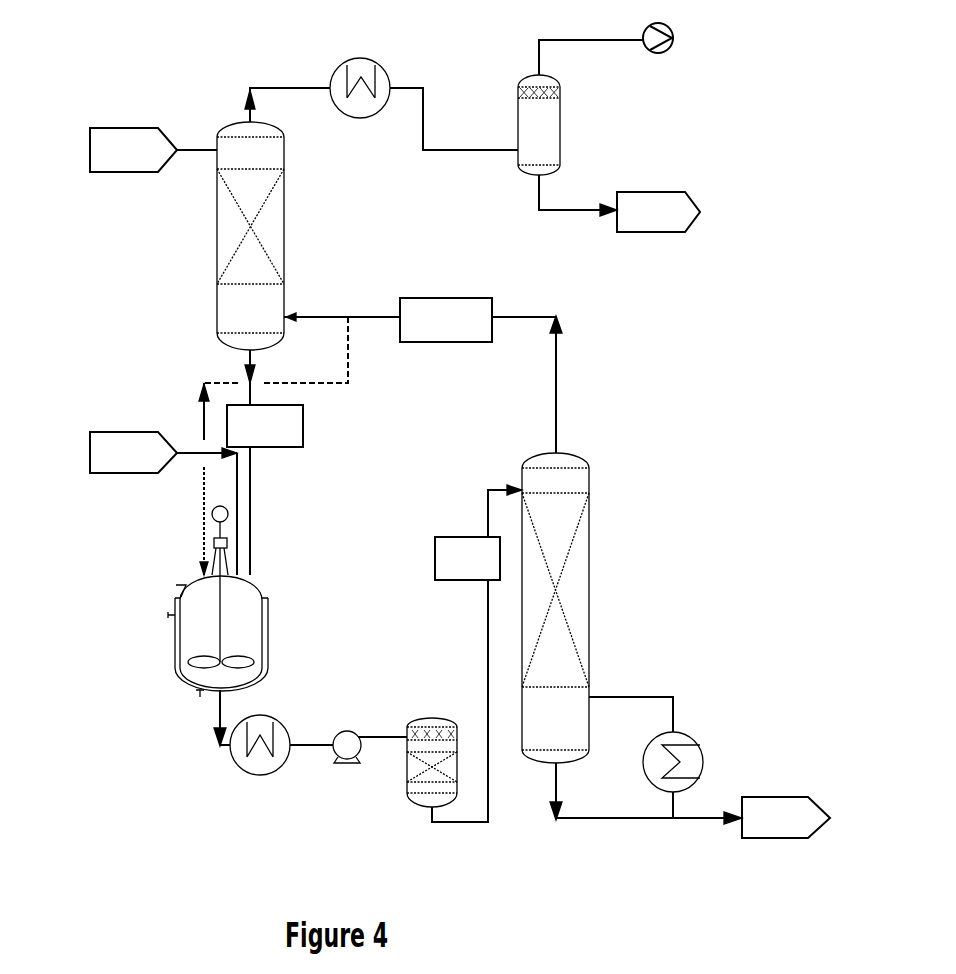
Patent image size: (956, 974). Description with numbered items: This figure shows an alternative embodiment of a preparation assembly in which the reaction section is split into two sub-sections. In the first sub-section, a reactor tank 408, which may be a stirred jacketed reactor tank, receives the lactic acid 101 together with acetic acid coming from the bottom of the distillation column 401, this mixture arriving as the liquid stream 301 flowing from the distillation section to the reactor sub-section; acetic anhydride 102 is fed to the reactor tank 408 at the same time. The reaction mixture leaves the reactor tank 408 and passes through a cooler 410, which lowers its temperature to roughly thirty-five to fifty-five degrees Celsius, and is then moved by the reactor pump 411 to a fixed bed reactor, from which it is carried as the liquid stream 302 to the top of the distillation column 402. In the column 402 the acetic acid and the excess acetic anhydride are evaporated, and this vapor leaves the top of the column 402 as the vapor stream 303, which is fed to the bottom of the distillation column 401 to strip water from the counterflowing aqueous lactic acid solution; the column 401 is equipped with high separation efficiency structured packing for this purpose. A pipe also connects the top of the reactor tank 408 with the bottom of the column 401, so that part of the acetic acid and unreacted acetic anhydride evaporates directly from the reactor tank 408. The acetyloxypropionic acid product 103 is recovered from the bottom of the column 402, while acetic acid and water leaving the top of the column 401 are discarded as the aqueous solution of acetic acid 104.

The lactic acid 101 is at (153, 150).
The acetic anhydride 102 is at (163, 503).
The (S)-2-acetyloxypropionic acid 103 is at (786, 817).
The aqueous solution of acetic acid 104 is at (658, 212).
The liquid stream 301 is at (265, 426).
The liquid stream 302 is at (467, 558).
The vapor stream 303 is at (446, 320).
The distillation column 401 is at (284, 220).
The distillation column 402 is at (548, 637).
The reactor tank 408 is at (262, 600).
The cooler 410 is at (243, 771).
The reactor pump 411 is at (347, 763).